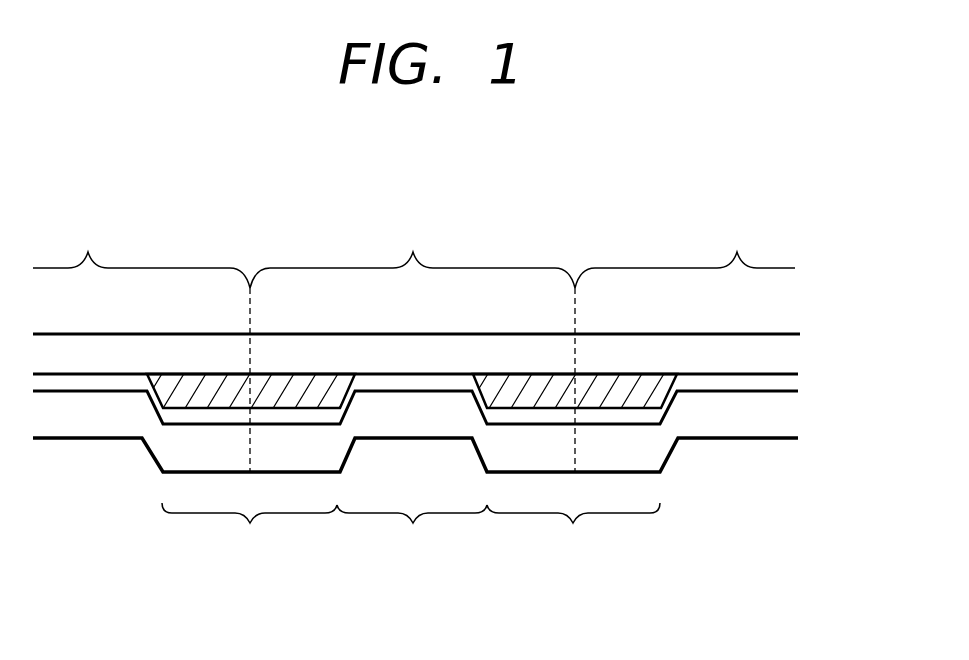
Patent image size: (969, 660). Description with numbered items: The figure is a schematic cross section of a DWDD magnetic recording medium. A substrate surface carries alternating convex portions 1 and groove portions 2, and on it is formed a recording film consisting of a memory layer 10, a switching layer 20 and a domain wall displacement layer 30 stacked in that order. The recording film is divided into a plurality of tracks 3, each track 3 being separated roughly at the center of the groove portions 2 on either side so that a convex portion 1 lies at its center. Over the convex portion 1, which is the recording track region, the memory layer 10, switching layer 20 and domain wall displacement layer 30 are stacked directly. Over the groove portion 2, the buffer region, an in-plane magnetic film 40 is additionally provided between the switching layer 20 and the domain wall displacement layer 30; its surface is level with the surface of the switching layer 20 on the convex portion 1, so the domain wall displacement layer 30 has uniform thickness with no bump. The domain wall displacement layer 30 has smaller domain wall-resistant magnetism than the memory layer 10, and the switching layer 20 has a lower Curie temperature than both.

The convex portion 1 is at (412, 532).
The groove portion 2 is at (411, 531).
The track 3 is at (414, 343).
The memory layer 10 is at (792, 422).
The switching layer 20 is at (790, 385).
The domain wall displacement layer 30 is at (788, 360).
The in-plane magnetic film 40 is at (162, 386).